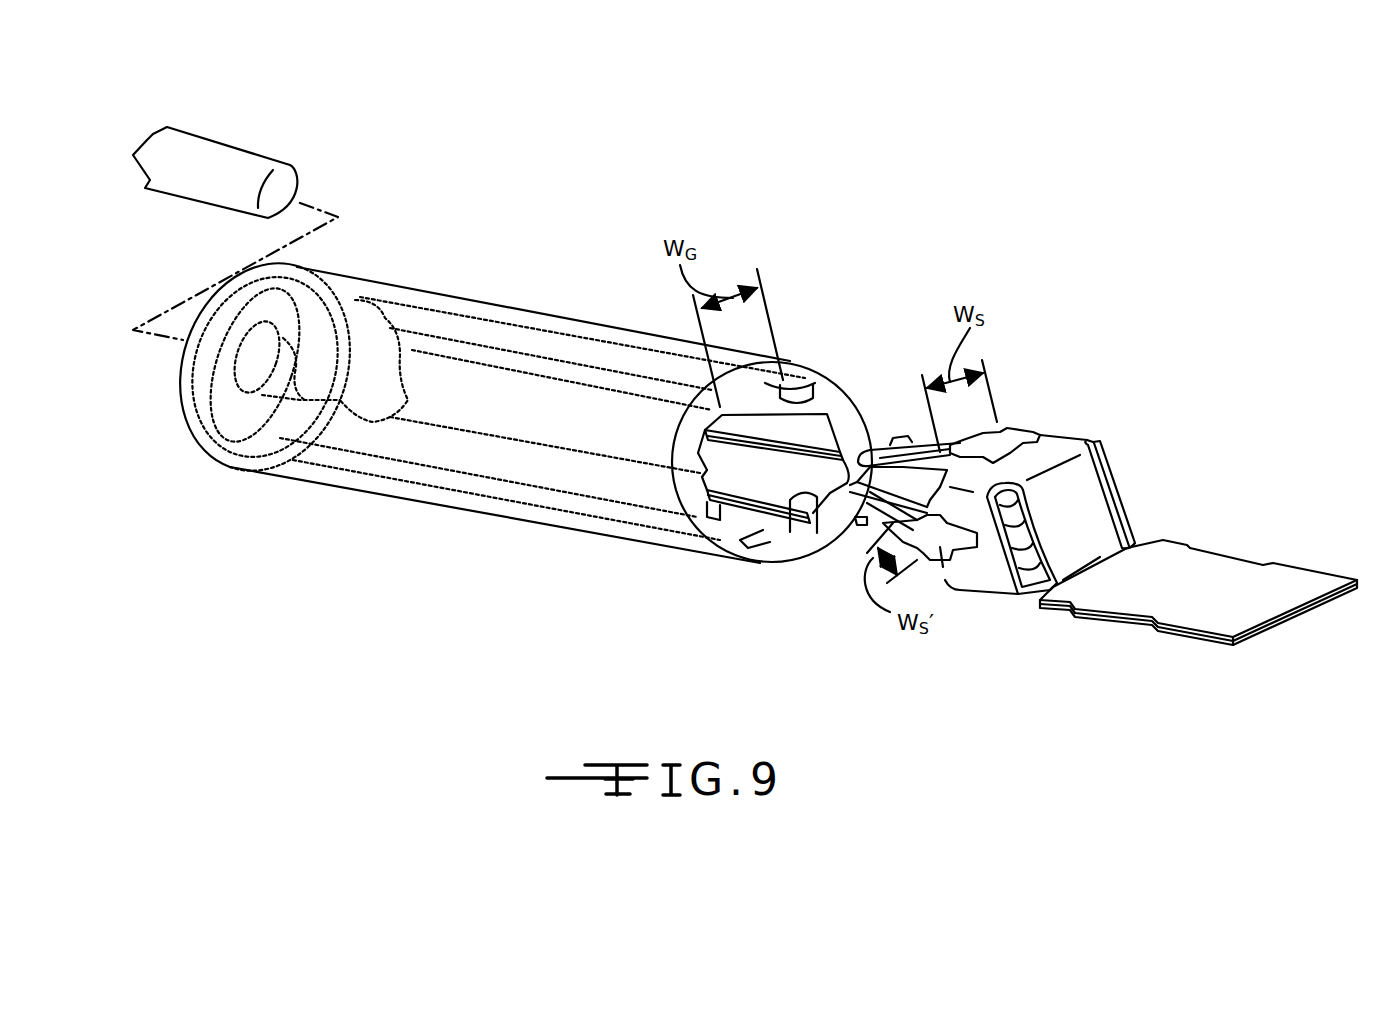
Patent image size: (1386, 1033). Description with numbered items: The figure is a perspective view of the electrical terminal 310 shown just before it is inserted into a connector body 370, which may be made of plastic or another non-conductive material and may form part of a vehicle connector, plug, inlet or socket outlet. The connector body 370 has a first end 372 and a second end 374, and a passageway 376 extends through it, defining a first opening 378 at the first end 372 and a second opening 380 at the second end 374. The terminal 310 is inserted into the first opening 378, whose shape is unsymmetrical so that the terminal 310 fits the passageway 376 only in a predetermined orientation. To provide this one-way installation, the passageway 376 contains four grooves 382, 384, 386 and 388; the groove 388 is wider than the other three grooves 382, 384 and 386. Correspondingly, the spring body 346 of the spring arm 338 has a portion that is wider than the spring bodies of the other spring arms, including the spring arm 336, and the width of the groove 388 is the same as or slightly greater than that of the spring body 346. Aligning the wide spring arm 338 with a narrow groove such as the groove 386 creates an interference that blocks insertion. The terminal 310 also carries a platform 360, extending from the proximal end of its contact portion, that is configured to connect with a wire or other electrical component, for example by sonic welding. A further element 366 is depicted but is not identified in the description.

The terminal 310 is at (1127, 502).
The spring arm 336 is at (943, 567).
The spring arm 338 is at (1000, 432).
The spring body 346 is at (1050, 437).
The platform 360 is at (1255, 612).
The mating pin 366 is at (223, 160).
The connector body 370 is at (529, 419).
The first end 372 is at (735, 563).
The second end 374 is at (183, 420).
The passageway 376 is at (763, 545).
The first opening 378 is at (690, 440).
The second opening 380 is at (262, 395).
The groove 382 is at (712, 512).
The groove 384 is at (827, 545).
The groove 386 is at (822, 440).
The groove 388 is at (805, 392).